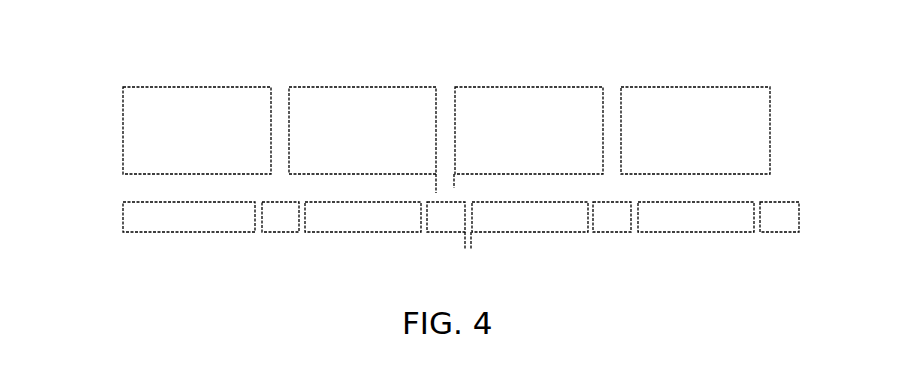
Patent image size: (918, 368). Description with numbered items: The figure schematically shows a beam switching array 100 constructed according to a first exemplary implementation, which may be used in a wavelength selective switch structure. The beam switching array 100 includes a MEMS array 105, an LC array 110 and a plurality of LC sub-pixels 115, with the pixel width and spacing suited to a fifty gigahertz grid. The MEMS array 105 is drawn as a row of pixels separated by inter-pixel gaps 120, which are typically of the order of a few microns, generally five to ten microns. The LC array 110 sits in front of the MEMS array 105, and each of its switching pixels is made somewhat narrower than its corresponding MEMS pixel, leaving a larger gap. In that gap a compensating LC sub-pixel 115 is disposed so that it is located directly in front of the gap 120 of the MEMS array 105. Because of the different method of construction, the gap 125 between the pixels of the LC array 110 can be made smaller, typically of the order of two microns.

The beam switching array 100 is at (112, 87).
The MEMS array 105 is at (718, 87).
The LC array 110 is at (725, 232).
The LC sub-pixel 115 is at (613, 232).
The inter-pixel gap 120 is at (447, 190).
The gap 125 is at (468, 250).